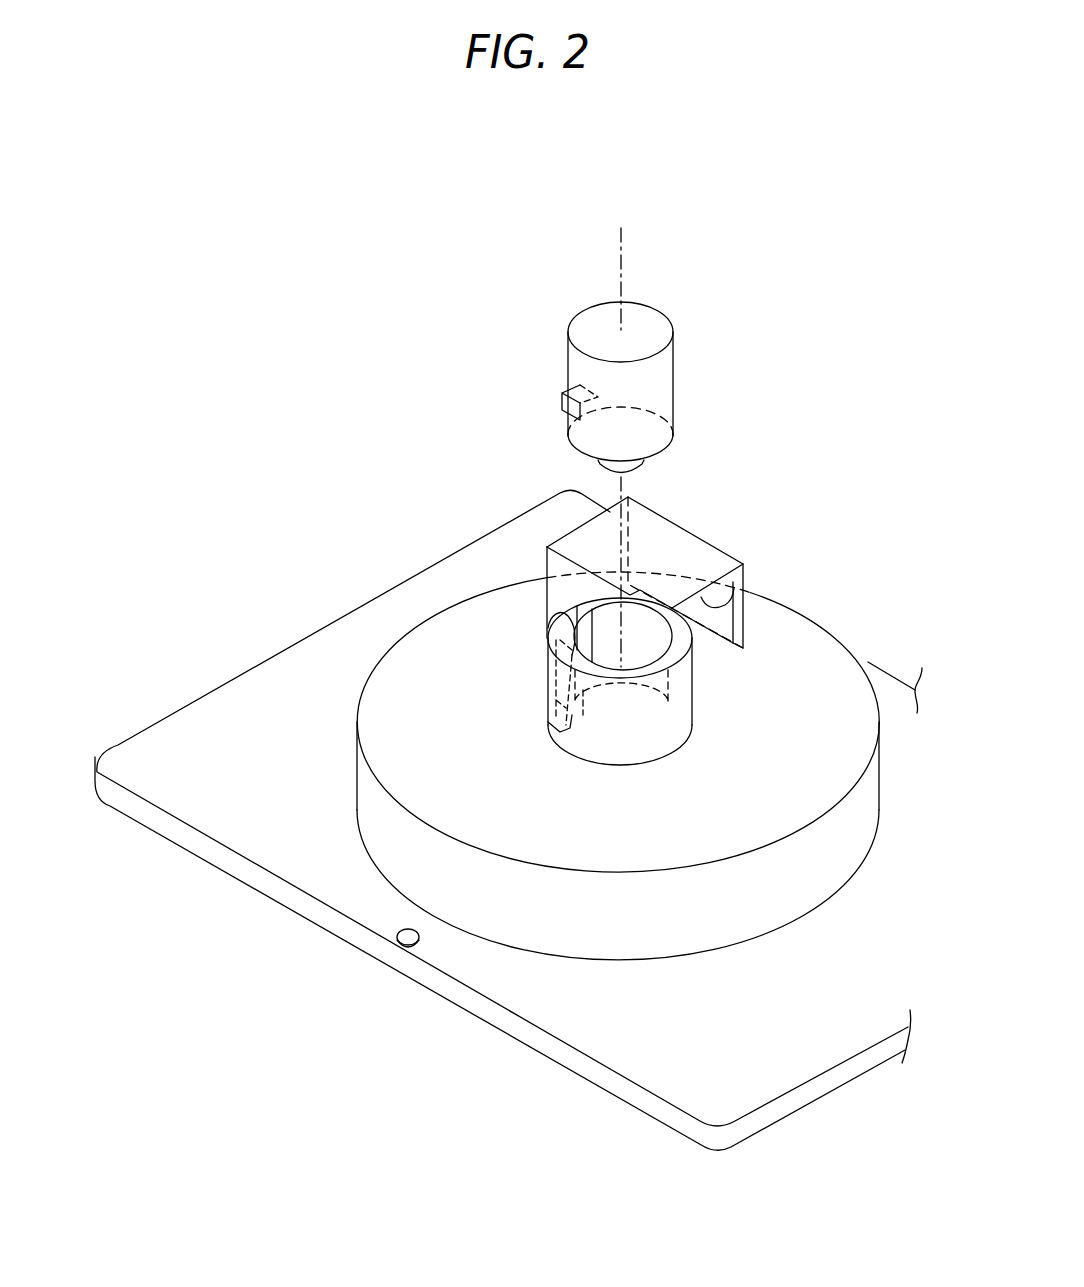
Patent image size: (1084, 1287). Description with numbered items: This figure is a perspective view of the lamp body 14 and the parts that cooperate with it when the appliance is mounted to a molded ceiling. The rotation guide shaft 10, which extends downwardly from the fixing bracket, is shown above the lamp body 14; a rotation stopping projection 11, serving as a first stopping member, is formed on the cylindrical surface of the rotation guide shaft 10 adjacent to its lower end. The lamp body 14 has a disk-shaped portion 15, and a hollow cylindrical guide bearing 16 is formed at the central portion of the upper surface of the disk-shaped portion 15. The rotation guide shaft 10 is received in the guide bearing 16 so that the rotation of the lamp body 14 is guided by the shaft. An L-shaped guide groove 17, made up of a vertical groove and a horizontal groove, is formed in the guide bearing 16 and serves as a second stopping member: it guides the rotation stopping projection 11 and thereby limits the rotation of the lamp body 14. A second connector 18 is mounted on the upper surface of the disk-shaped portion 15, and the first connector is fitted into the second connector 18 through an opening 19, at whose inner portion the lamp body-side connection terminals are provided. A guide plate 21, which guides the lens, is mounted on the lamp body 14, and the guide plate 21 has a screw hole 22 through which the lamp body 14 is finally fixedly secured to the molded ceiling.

The rotation guide shaft 10 is at (568, 352).
The rotation stopping projection 11 is at (562, 398).
The lamp body 14 is at (320, 503).
The disk-shaped portion 15 is at (354, 782).
The guide bearing 16 is at (692, 680).
The guide groove 17 is at (548, 711).
The second connector 18 is at (677, 526).
The opening 19 is at (740, 596).
The guide plate 21 is at (286, 881).
The screw hole 22 is at (413, 945).